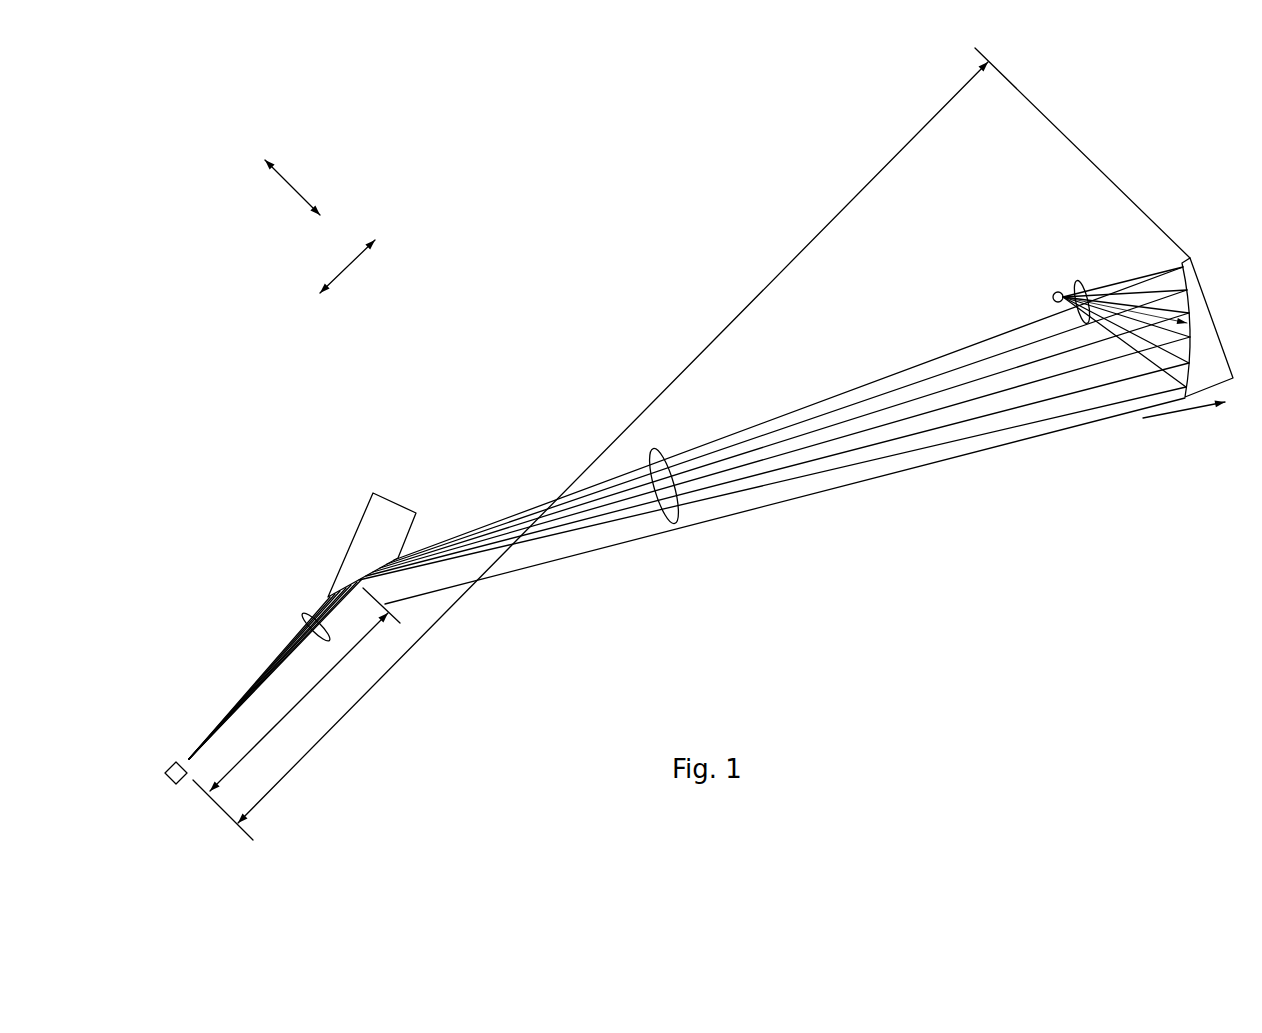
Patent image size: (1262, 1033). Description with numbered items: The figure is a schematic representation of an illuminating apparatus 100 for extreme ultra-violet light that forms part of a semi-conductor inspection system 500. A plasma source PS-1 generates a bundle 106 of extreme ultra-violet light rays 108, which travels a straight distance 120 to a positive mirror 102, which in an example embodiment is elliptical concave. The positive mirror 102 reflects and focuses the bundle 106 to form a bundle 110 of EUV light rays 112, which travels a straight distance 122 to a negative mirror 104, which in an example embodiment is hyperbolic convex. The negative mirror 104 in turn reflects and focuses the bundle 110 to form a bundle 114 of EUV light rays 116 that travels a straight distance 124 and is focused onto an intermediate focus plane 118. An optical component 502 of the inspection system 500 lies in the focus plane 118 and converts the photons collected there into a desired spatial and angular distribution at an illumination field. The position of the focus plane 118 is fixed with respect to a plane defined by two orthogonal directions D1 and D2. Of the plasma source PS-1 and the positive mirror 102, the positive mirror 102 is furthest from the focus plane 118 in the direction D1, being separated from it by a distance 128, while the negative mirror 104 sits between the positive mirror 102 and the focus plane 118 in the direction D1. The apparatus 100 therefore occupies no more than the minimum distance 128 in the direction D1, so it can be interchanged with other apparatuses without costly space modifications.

The illuminating apparatus 100 is at (700, 228).
The positive mirror 102 is at (1210, 263).
The negative mirror 104 is at (334, 524).
The bundle of extreme ultra-violet light rays 106 is at (1082, 284).
The extreme ultra-violet light rays 108 is at (1133, 281).
The bundle of EUV light rays 110 is at (673, 524).
The EUV light rays 112 is at (783, 481).
The bundle of EUV light rays 114 is at (307, 617).
The EUV light rays 116 is at (263, 672).
The intermediate focus plane 118 is at (190, 753).
The straight distance 120 is at (1140, 318).
The straight distance 122 is at (927, 470).
The straight distance 124 is at (313, 693).
The distance 128 is at (428, 642).
The semi-conductor inspection system 500 is at (455, 147).
The optical component 502 is at (170, 767).
The plasma source PS-1 is at (1053, 297).
The direction D1 is at (347, 262).
The direction D2 is at (300, 188).